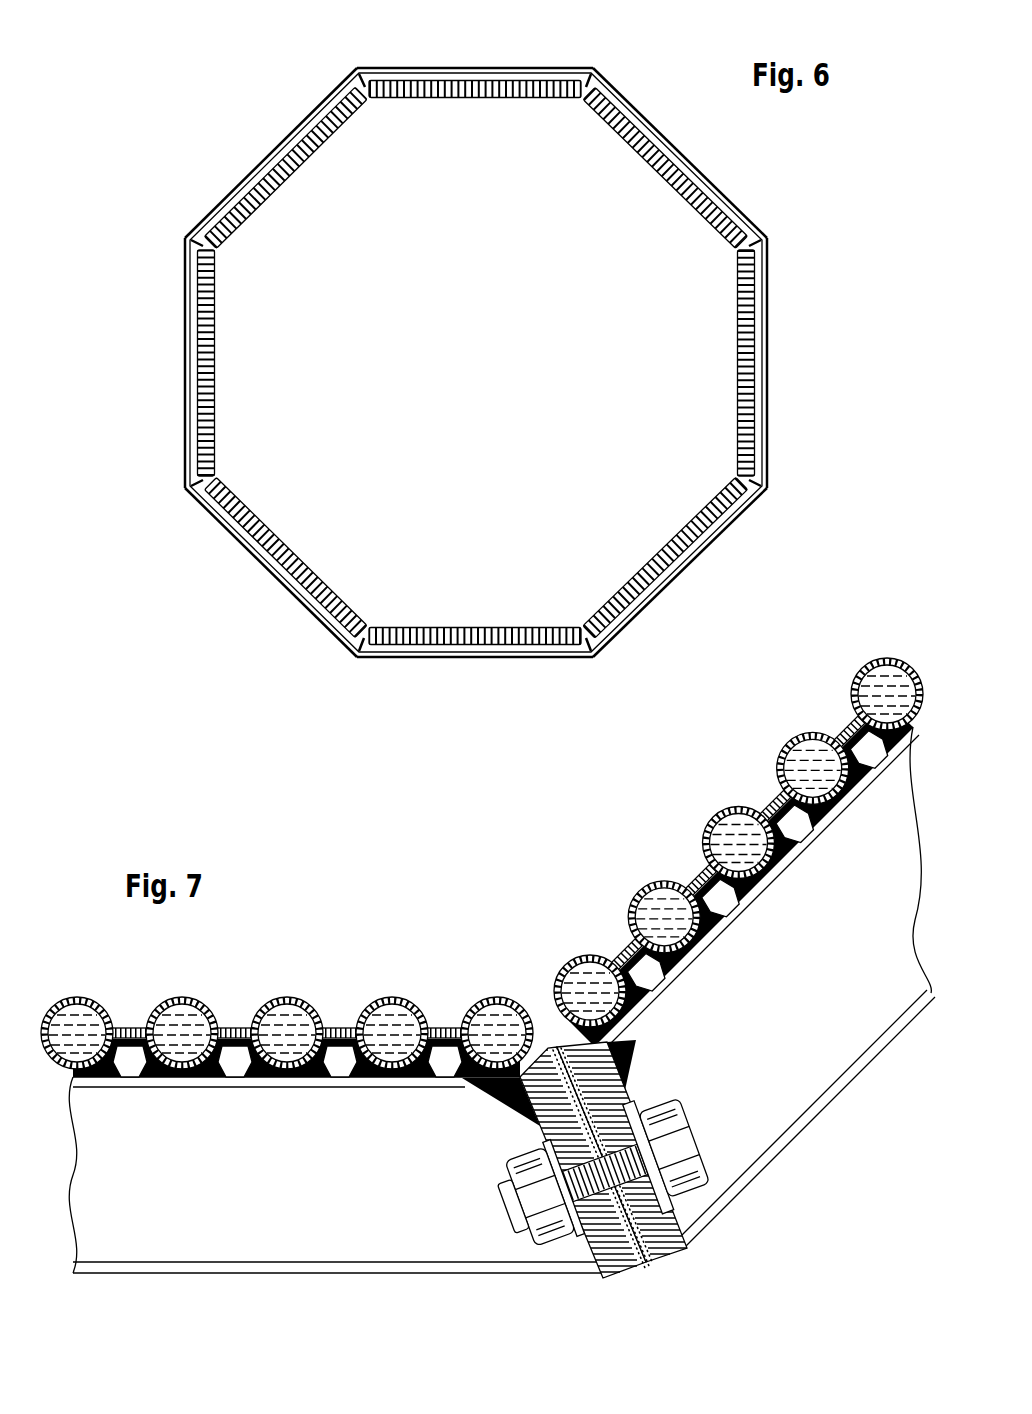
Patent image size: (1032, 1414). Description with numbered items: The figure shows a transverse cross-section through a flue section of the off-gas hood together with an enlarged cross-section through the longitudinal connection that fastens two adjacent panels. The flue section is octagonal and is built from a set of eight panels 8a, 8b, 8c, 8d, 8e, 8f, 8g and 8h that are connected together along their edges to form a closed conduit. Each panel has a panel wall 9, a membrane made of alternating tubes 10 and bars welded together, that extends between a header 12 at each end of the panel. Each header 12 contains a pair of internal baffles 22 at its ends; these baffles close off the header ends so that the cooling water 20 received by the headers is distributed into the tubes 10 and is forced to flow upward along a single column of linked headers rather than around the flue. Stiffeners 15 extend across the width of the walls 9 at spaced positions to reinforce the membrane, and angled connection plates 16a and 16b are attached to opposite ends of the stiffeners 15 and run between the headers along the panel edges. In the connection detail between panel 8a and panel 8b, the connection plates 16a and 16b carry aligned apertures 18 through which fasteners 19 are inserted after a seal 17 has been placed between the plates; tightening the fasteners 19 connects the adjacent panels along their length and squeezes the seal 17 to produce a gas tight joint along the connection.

In FIG. 6, the panel 8a is at (700, 548).
In FIG. 7, the panel 8a is at (875, 1103).
In FIG. 6, the panel 8b is at (487, 665).
In FIG. 7, the panel 8b is at (300, 1306).
In FIG. 6, the panel 8c is at (278, 583).
In FIG. 6, the panel 8d is at (183, 368).
In FIG. 6, the panel 8e is at (250, 175).
In FIG. 6, the panel 8f is at (484, 66).
In FIG. 6, the panel 8g is at (667, 140).
In FIG. 6, the panel 8h is at (768, 345).
In FIG. 6, the panel wall 9 is at (584, 100).
In FIG. 7, the panel wall 9 is at (305, 1000).
In FIG. 7, the tubes 10 is at (110, 1005).
In FIG. 6, the header 12 is at (446, 66).
In FIG. 7, the stiffener 15 is at (798, 983).
In FIG. 7, the connection plate 16a is at (630, 1265).
In FIG. 7, the connection plate 16b is at (670, 1225).
In FIG. 7, the seal 17 is at (545, 1167).
In FIG. 7, the aperture 18 is at (628, 1108).
In FIG. 7, the fastener 19 is at (740, 1152).
In FIG. 7, the cooling water 20 is at (240, 1027).
In FIG. 6, the internal baffle 22 is at (363, 72).